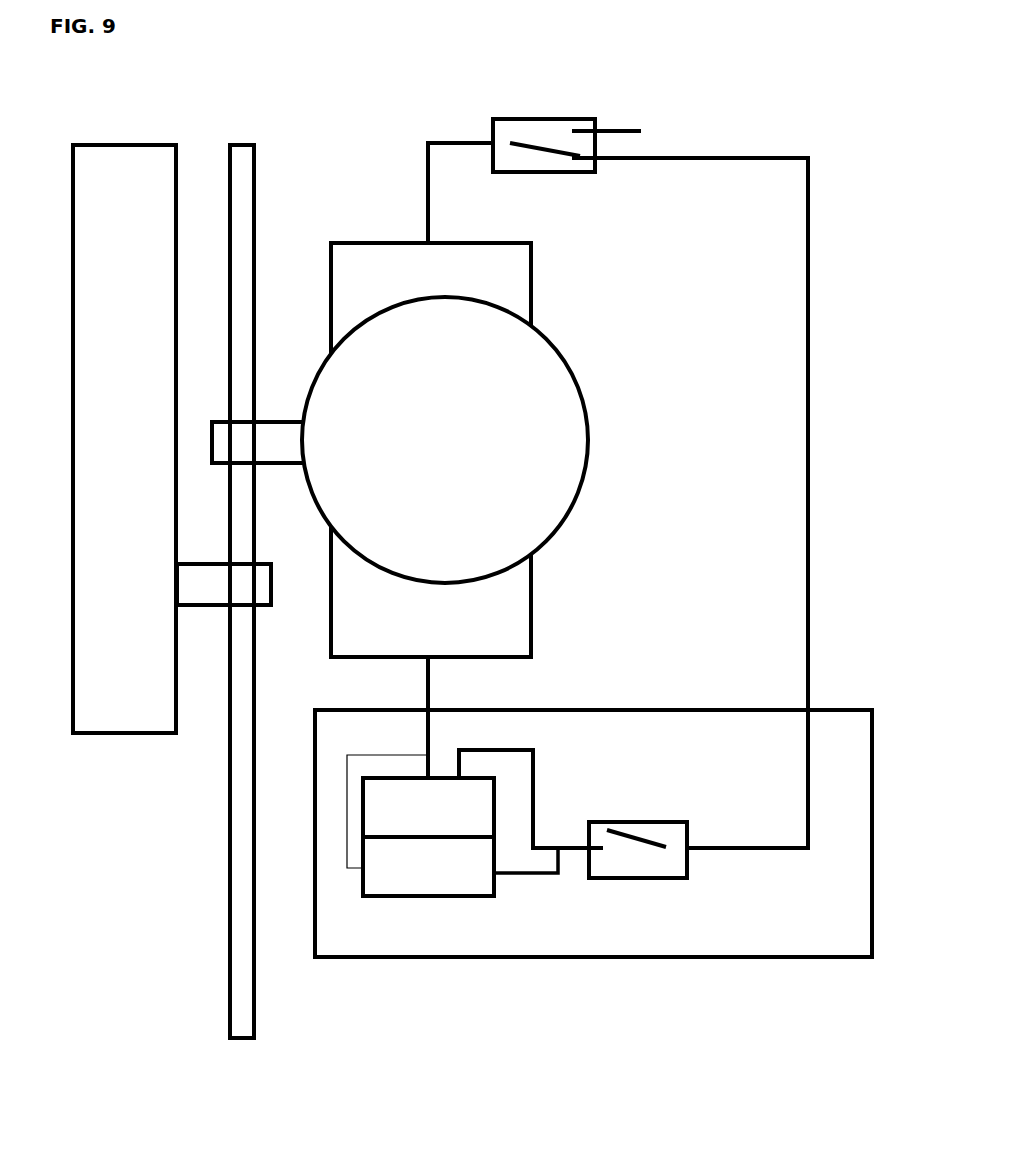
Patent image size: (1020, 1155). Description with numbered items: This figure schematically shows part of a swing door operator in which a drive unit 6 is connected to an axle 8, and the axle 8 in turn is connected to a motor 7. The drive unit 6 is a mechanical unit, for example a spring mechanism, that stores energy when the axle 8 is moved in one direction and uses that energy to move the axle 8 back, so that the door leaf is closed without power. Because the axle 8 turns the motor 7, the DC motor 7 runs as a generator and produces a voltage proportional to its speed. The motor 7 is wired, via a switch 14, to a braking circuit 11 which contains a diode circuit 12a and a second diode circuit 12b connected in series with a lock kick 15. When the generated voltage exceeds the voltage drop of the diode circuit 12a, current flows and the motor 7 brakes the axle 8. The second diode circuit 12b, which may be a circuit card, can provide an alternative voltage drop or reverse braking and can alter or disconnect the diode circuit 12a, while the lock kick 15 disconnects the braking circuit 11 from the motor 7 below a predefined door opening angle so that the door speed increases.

The drive unit 6 is at (145, 134).
The motor 7 is at (586, 358).
The axle 8 is at (274, 139).
The braking circuit 11 is at (421, 978).
The diode circuit 12a is at (395, 820).
The second diode circuit 12b is at (440, 878).
The switch 14 is at (582, 104).
The lock kick 15 is at (660, 889).